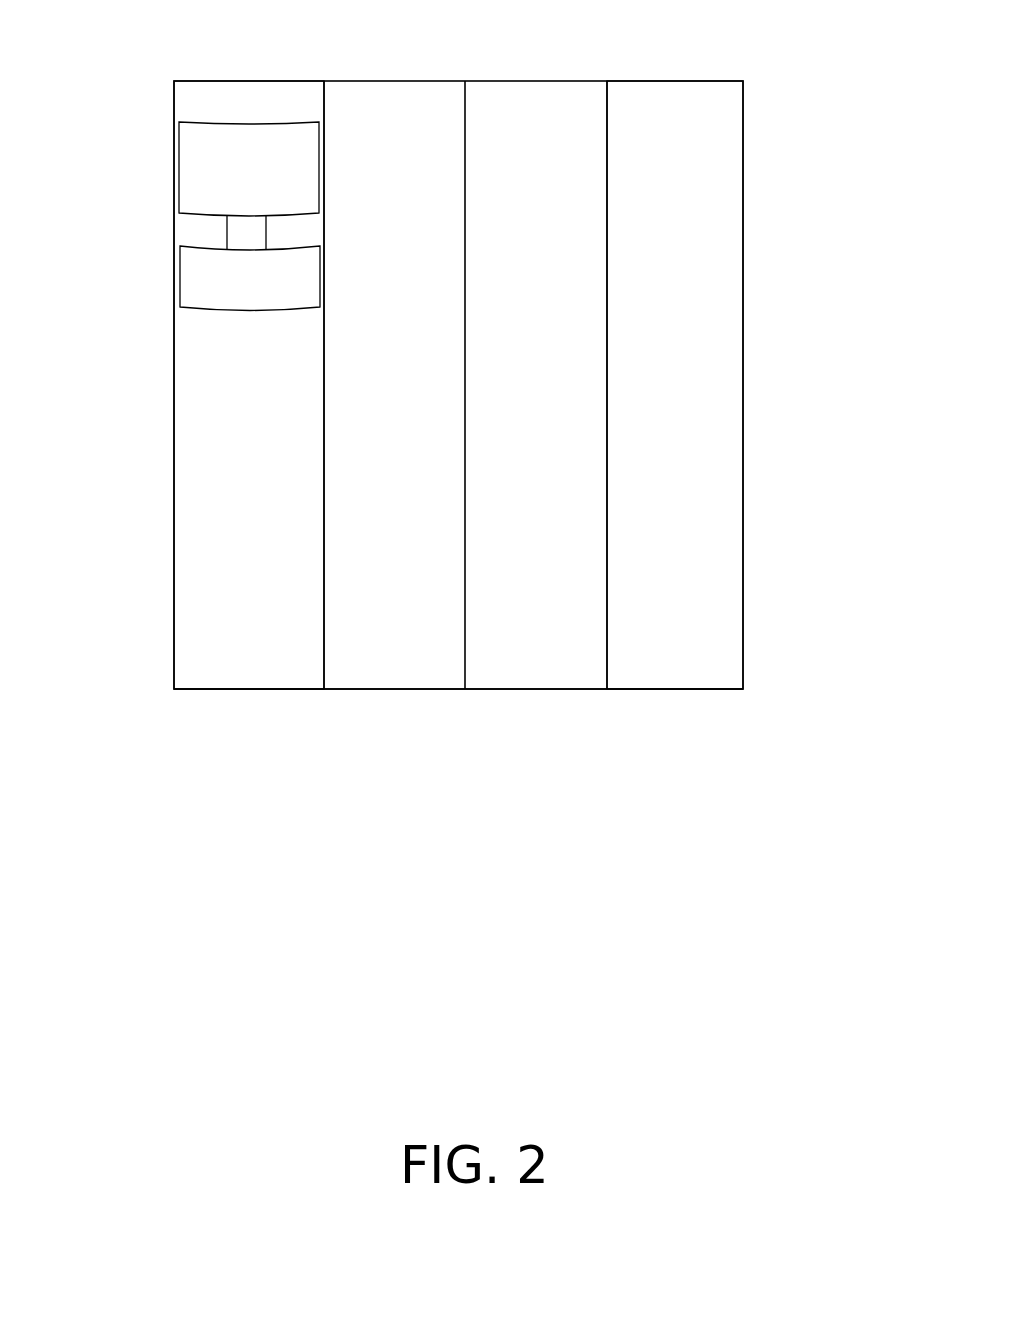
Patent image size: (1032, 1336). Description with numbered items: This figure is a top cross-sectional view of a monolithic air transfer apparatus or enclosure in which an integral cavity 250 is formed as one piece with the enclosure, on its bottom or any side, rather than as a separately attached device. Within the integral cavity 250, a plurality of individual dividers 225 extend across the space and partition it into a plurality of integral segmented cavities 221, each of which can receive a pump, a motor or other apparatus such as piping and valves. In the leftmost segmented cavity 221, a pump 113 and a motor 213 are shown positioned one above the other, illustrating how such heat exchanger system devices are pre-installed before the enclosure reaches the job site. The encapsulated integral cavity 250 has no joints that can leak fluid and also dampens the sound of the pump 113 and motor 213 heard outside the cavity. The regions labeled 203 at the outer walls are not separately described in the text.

The integral cavity 250 is at (514, 65).
The panel 203 is at (158, 470).
The individual dividers 225 is at (339, 327).
The integral segmented cavity 221 is at (248, 688).
The pump 113 is at (176, 182).
The motor 213 is at (190, 299).